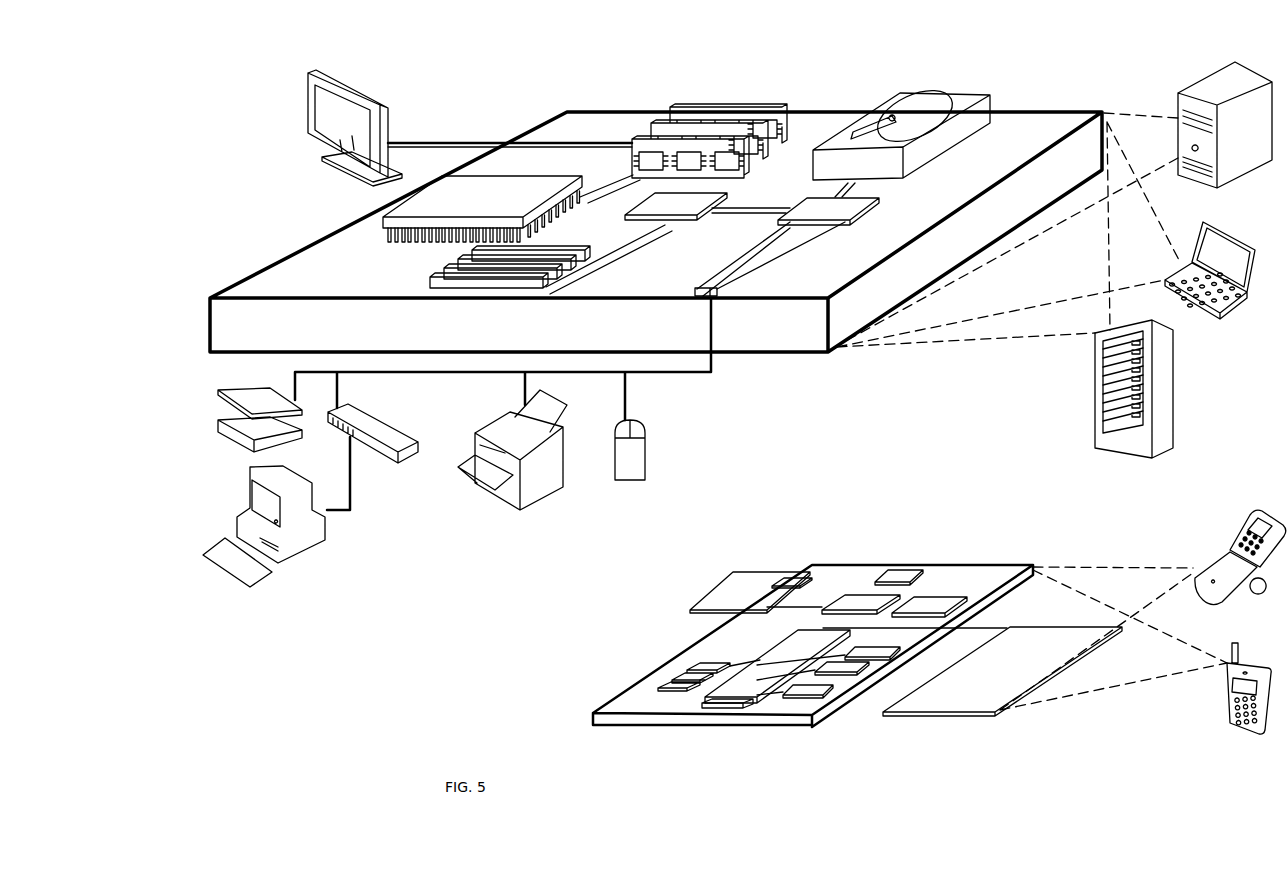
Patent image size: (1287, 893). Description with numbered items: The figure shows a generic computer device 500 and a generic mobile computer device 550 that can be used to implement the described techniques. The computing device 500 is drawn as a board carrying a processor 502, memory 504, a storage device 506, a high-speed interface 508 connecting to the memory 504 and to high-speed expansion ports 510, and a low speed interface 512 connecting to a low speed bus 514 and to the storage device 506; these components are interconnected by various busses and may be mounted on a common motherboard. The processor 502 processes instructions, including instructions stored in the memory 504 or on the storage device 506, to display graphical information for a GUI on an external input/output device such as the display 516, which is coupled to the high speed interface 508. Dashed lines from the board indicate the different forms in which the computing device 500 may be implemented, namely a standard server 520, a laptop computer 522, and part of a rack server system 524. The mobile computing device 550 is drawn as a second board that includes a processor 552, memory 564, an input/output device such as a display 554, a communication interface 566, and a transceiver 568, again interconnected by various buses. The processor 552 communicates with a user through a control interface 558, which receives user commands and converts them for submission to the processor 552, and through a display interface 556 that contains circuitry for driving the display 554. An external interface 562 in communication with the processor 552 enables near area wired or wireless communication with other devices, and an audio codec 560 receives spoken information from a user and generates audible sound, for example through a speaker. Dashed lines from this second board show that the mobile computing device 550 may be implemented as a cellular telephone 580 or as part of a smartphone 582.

The computing device 500 is at (501, 88).
The processor 502 is at (383, 224).
The memory 504 is at (681, 107).
The storage device 506 is at (899, 96).
The high-speed interface 508 is at (652, 205).
The high-speed expansion ports 510 is at (453, 264).
The low speed interface 512 is at (828, 208).
The low speed bus 514 is at (718, 296).
The display 516 is at (311, 73).
The standard server 520 is at (1178, 103).
The laptop computer 522 is at (1205, 226).
The rack server system 524 is at (1096, 410).
The mobile computing device 550 is at (796, 547).
The processor 552 is at (753, 701).
The display 554 is at (1000, 712).
The display interface 556 is at (817, 697).
The control interface 558 is at (869, 667).
The audio codec 560 is at (900, 572).
The external interface 562 is at (792, 581).
The memory 564 is at (730, 582).
The communication interface 566 is at (860, 600).
The transceiver 568 is at (933, 600).
The cellular telephone 580 is at (1251, 516).
The smartphone 582 is at (1234, 641).